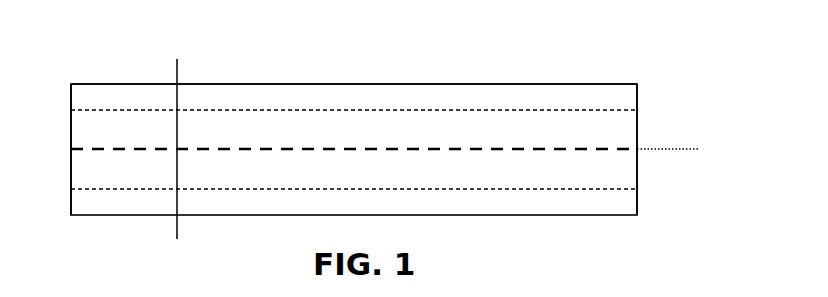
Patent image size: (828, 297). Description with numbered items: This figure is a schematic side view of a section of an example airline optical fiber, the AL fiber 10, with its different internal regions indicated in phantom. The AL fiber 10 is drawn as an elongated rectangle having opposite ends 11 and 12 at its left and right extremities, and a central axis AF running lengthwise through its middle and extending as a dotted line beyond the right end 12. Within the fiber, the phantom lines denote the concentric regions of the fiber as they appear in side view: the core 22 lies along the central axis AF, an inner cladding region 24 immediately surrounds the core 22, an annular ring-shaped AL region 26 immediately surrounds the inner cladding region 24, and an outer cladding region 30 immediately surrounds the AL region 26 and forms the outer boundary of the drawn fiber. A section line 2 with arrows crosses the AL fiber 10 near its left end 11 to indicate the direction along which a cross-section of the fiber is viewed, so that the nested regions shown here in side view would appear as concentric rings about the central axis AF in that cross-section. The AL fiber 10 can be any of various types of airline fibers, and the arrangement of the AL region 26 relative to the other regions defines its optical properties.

The AL optical fiber 10 is at (558, 83).
The end of AL fiber 11 is at (71, 160).
The end of AL fiber 12 is at (637, 127).
The core region 22 is at (413, 148).
The inner cladding region 24 is at (239, 123).
The annular AL region 26 is at (334, 108).
The outer cladding region 30 is at (503, 98).
The section line 2- 2 is at (177, 59).
The central axis AF is at (662, 150).